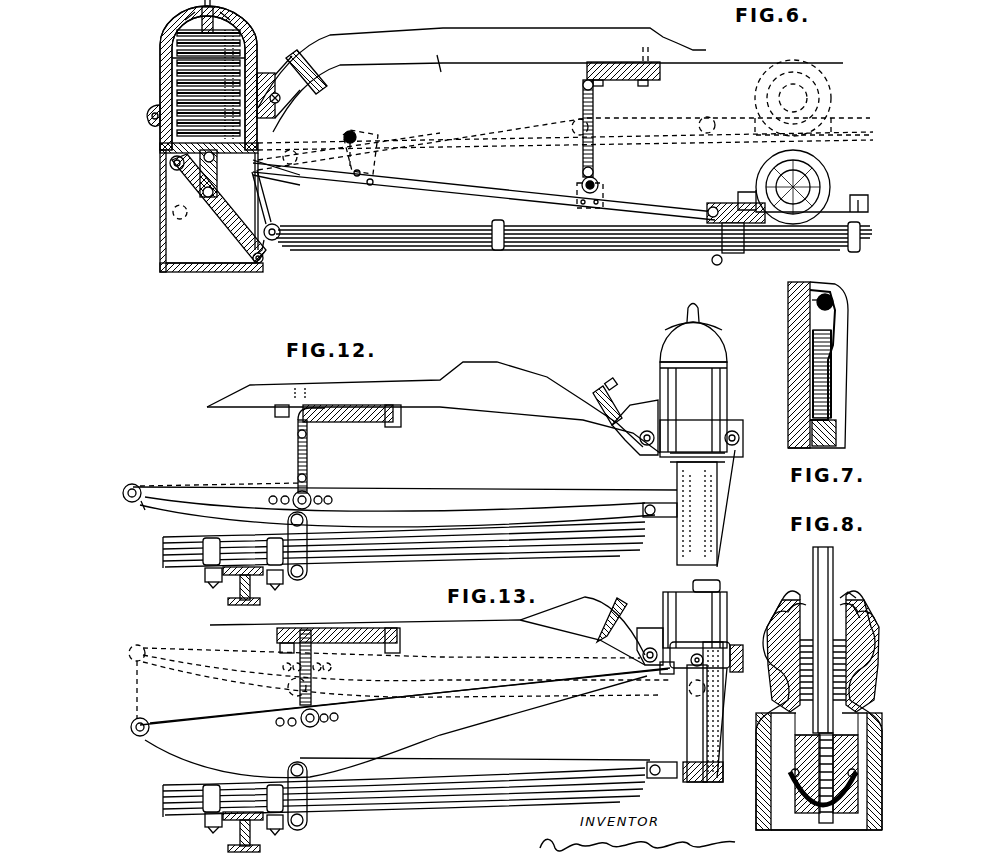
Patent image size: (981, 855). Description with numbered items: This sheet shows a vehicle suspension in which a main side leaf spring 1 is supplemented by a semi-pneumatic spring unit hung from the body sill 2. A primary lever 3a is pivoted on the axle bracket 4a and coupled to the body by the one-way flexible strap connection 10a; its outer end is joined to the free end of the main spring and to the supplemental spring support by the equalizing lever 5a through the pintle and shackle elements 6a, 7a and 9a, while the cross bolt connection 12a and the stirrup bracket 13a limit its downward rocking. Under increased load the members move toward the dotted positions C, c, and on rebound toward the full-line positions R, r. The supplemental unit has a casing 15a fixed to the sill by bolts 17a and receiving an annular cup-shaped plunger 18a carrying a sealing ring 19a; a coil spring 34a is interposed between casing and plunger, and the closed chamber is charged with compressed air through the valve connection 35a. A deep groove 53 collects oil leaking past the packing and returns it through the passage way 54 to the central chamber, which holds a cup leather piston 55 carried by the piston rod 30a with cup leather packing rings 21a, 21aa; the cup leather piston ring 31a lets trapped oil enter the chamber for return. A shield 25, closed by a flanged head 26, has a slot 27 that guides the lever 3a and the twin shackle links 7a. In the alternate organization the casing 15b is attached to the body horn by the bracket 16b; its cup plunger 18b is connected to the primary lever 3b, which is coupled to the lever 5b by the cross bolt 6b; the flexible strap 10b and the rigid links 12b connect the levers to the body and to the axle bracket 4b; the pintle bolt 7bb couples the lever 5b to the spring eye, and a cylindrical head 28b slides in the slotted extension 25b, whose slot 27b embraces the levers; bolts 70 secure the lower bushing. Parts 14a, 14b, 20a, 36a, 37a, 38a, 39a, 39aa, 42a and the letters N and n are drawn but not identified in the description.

In FIG. 6, the main side leaf spring 1 is at (416, 242).
In FIG. 12, the main side leaf spring 1 is at (502, 543).
In FIG. 13, the main side leaf spring 1 is at (497, 792).
In FIG. 6, the body sill 2 is at (436, 63).
In FIG. 12, the body sill 2 is at (567, 380).
In FIG. 13, the body sill 2 is at (585, 600).
In FIG. 6, the primary lever 3a is at (645, 200).
In FIG. 12, the primary lever 3b is at (407, 488).
In FIG. 13, the primary lever 3b is at (455, 709).
In FIG. 6, the axle bracket 4a is at (710, 203).
In FIG. 12, the axle bracket 4b is at (283, 578).
In FIG. 13, the axle bracket 4b is at (290, 827).
In FIG. 6, the equalizing lever 5a is at (224, 230).
In FIG. 12, the lever 5b is at (464, 514).
In FIG. 13, the lever 5b is at (510, 762).
In FIG. 6, the pintle and shackle element 6a is at (176, 172).
In FIG. 12, the cross bolt 6b is at (142, 487).
In FIG. 13, the cross bolt 6b is at (401, 723).
In FIG. 6, the twin shackle links 7a is at (276, 242).
In FIG. 12, the pintle bolt 7bb is at (643, 503).
In FIG. 13, the pintle bolt 7bb is at (652, 764).
In FIG. 6, the shackle link connection 9a is at (262, 172).
In FIG. 6, the flexible strap connection 10a is at (583, 102).
In FIG. 12, the flexible strap 10b is at (298, 455).
In FIG. 13, the flexible strap 10b is at (318, 688).
In FIG. 6, the cross bolt connection 12a is at (583, 185).
In FIG. 12, the longitudinally rigid links 12b is at (313, 563).
In FIG. 13, the longitudinally rigid links 12b is at (323, 810).
In FIG. 6, the stirrup bracket 13a is at (377, 157).
In FIG. 6, the frame bracket 14a is at (635, 81).
In FIG. 12, the frame bracket 14b is at (351, 423).
In FIG. 13, the frame bracket 14b is at (374, 627).
In FIG. 6, the casing 15a is at (175, 34).
In FIG. 7, the casing 15a is at (790, 366).
In FIG. 12, the casing 15b is at (666, 338).
In FIG. 13, the casing 15b is at (690, 608).
In FIG. 12, the bracket 16b is at (645, 400).
In FIG. 13, the bracket 16b is at (612, 645).
In FIG. 6, the bolts 17a is at (288, 100).
In FIG. 6, the cup-shaped plunger 18a is at (168, 147).
In FIG. 7, the cup-shaped plunger 18a is at (832, 434).
In FIG. 13, the cup plunger 18b is at (680, 590).
In FIG. 6, the packing ring 19a is at (172, 58).
In FIG. 7, the packing ring 19a is at (812, 318).
In FIG. 6, the filler plug 20a is at (214, 10).
In FIG. 8, the cup leather packing ring 21a is at (788, 703).
In FIG. 8, the cup leather packing ring 21aa is at (800, 592).
In FIG. 6, the shield 25 is at (160, 238).
In FIG. 12, the slotted extension 25b is at (725, 488).
In FIG. 6, the flanged head 26 is at (208, 272).
In FIG. 6, the slot 27 is at (262, 205).
In FIG. 13, the slot 27b is at (684, 748).
In FIG. 13, the cylindrical head 28b is at (684, 785).
In FIG. 8, the piston rod 30a is at (813, 562).
In FIG. 8, the cup leather piston ring 31a is at (783, 817).
In FIG. 6, the coil spring 34a is at (177, 80).
In FIG. 6, the valve connection 35a is at (243, 22).
In FIG. 7, the spring seat 36a is at (835, 302).
In FIG. 8, the cylinder wall 37a is at (852, 694).
In FIG. 7, the spring 38a is at (831, 327).
In FIG. 8, the coils 39a is at (792, 668).
In FIG. 8, the coil end 39aa is at (853, 585).
In FIG. 8, the spring clip 42a is at (784, 799).
In FIG. 6, the deep groove 53 is at (158, 112).
In FIG. 6, the passage way 54 is at (270, 125).
In FIG. 8, the cup leather piston 55 is at (790, 768).
In FIG. 12, the bolts 70 is at (678, 513).
In FIG. 6, the dotted line position C is at (814, 98).
In FIG. 6, the full line position R is at (803, 187).
In FIG. 13, the full line position R is at (165, 795).
In FIG. 12, the spring N is at (163, 548).
In FIG. 6, the dotted line position c is at (173, 212).
In FIG. 13, the dotted line position c is at (417, 673).
In FIG. 6, the full line position r is at (170, 164).
In FIG. 13, the full line position r is at (435, 703).
In FIG. 12, the pivot n is at (130, 485).